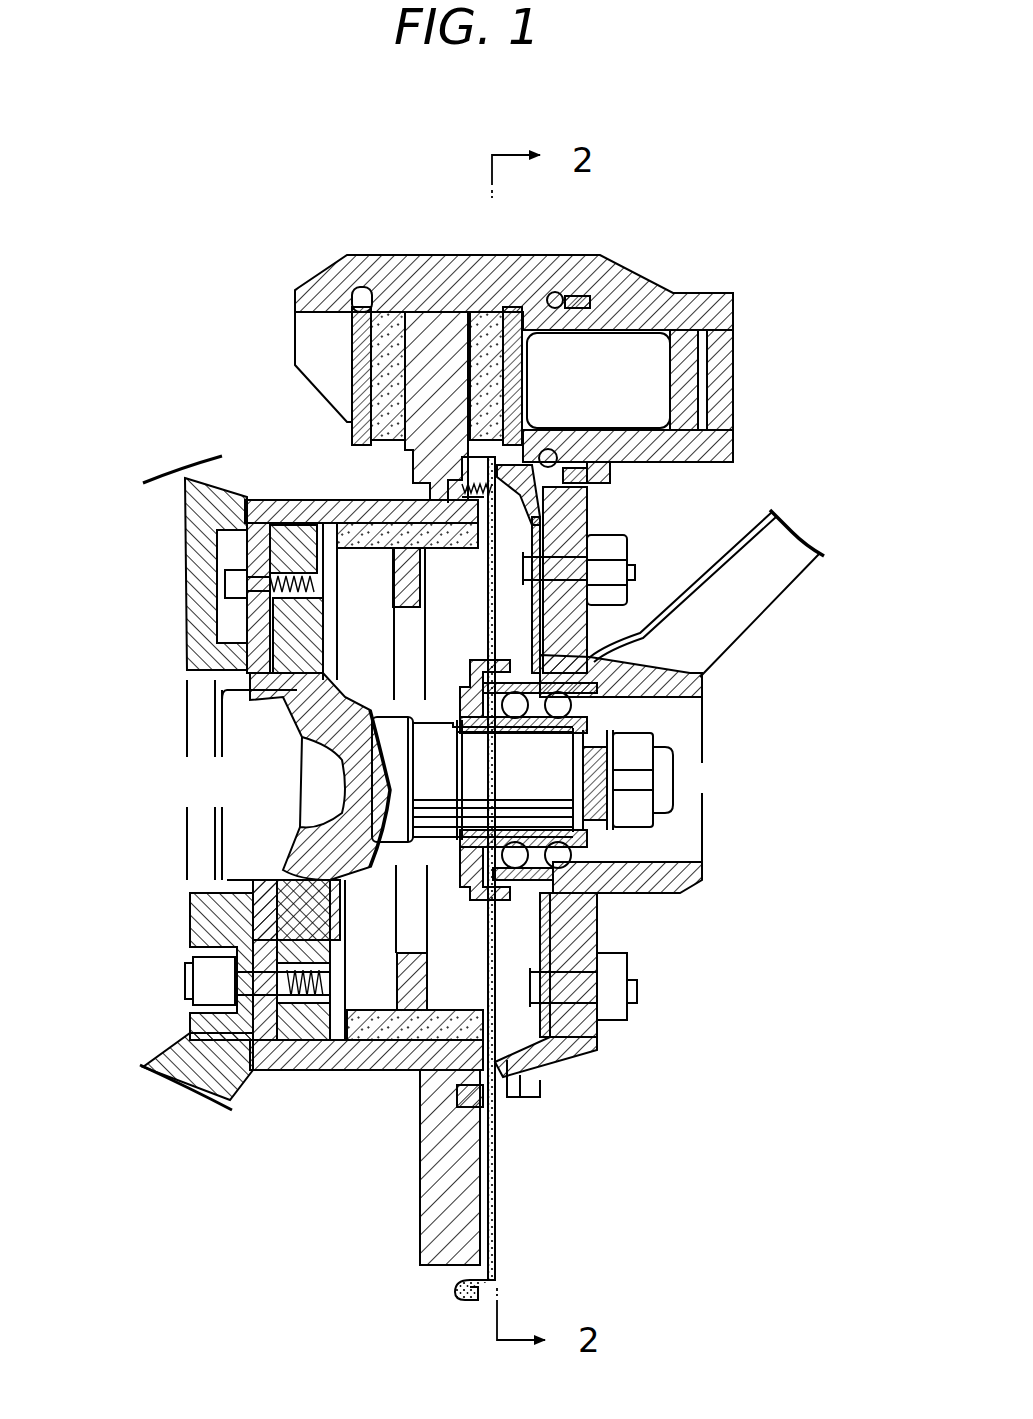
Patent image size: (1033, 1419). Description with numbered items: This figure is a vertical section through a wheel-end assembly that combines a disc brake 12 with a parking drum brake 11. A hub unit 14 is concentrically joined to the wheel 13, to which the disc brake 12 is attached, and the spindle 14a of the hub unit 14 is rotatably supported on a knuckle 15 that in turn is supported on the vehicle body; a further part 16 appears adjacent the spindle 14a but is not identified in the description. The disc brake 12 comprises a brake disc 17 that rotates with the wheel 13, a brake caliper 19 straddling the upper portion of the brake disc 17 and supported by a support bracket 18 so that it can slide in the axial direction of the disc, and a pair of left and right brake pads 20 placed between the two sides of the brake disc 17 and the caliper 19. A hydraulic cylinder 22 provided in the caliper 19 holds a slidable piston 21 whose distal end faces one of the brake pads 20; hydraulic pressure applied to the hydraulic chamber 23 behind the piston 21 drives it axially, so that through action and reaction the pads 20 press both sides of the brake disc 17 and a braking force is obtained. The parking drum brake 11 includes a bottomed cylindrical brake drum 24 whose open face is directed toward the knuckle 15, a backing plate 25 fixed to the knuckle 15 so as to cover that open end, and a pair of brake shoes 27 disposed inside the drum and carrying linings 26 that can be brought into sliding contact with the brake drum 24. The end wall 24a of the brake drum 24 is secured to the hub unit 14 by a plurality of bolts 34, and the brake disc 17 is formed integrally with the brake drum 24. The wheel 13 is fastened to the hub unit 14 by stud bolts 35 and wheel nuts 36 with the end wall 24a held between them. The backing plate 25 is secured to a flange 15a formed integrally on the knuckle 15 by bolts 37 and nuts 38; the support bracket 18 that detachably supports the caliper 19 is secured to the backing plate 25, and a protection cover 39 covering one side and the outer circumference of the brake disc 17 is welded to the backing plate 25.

The parking drum brake 11 is at (307, 1074).
The disc brake 12 is at (300, 276).
The wheel 13 is at (196, 470).
The hub unit 14 is at (300, 692).
The spindle 14a is at (680, 724).
The knuckle 15 is at (657, 883).
The flange 15a is at (580, 1038).
The bearing 16 is at (597, 858).
The brake disc 17 is at (420, 1189).
The support bracket 18 is at (587, 507).
The brake caliper 19 is at (540, 296).
The brake pads 20 is at (385, 300).
The piston 21 is at (702, 415).
The hydraulic cylinder 22 is at (640, 292).
The hydraulic chamber 23 is at (707, 357).
The brake drum 24 is at (303, 500).
The end wall 24a is at (290, 623).
The backing plate 25 is at (540, 1050).
The linings 26 is at (360, 528).
The brake shoes 27 is at (363, 555).
The bolts 34 is at (232, 580).
The stud bolts 35 is at (190, 982).
The wheel nuts 36 is at (205, 966).
The bolts 37 is at (640, 987).
The nuts 38 is at (600, 960).
The protection cover 39 is at (500, 1192).